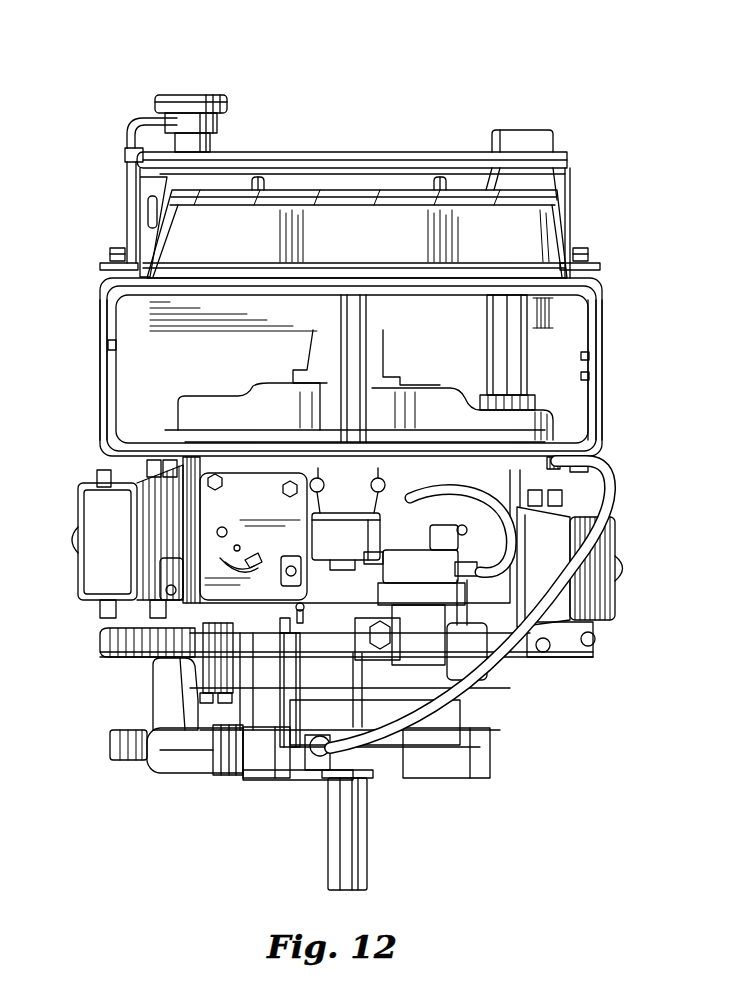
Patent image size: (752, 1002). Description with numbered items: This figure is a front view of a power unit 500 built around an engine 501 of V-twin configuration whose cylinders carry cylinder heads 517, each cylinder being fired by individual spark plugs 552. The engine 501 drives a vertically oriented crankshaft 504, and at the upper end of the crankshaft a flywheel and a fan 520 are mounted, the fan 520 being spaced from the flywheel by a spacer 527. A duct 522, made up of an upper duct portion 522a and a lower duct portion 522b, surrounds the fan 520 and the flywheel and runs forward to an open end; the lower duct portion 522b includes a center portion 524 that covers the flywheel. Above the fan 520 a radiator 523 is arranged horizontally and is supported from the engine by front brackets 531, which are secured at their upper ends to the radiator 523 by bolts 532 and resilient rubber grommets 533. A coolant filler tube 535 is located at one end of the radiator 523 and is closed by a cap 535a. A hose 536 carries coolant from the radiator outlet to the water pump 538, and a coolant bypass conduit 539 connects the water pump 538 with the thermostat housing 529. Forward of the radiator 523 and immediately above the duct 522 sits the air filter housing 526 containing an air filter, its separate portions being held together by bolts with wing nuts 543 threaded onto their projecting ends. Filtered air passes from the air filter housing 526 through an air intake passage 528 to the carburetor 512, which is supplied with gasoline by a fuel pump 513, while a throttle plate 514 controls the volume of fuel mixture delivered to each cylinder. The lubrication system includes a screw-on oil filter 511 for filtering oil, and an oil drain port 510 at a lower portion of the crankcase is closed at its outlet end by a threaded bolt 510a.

The power unit 500 is at (456, 52).
The engine 501 is at (612, 682).
The crankshaft 504 is at (368, 842).
The oil drain port 510 is at (142, 770).
The threaded bolt 510a is at (110, 748).
The oil filter 511 is at (100, 648).
The carburetor 512 is at (352, 553).
The fuel pump 513 is at (438, 581).
The throttle plate 514 is at (261, 506).
The cylinder heads 517 is at (115, 518).
The fan 520 is at (548, 317).
The duct 522 is at (588, 380).
The upper duct portion 522a is at (588, 333).
The lower duct portion 522b is at (590, 400).
The radiator 523 is at (350, 152).
The center portion 524 is at (256, 392).
The air filter housing 526 is at (380, 242).
The spacer 527 is at (553, 140).
The air intake passage 528 is at (350, 350).
The thermostat housing 529 is at (498, 363).
The front brackets 531 is at (98, 332).
The bolts 532 is at (118, 247).
The rubber grommets 533 is at (100, 265).
The coolant filler tube 535 is at (210, 140).
The cap 535a is at (224, 96).
The hose 536 is at (162, 705).
The water pump 538 is at (262, 760).
The coolant bypass conduit 539 is at (503, 657).
The wing nuts 543 is at (434, 184).
The spark plugs 552 is at (74, 546).